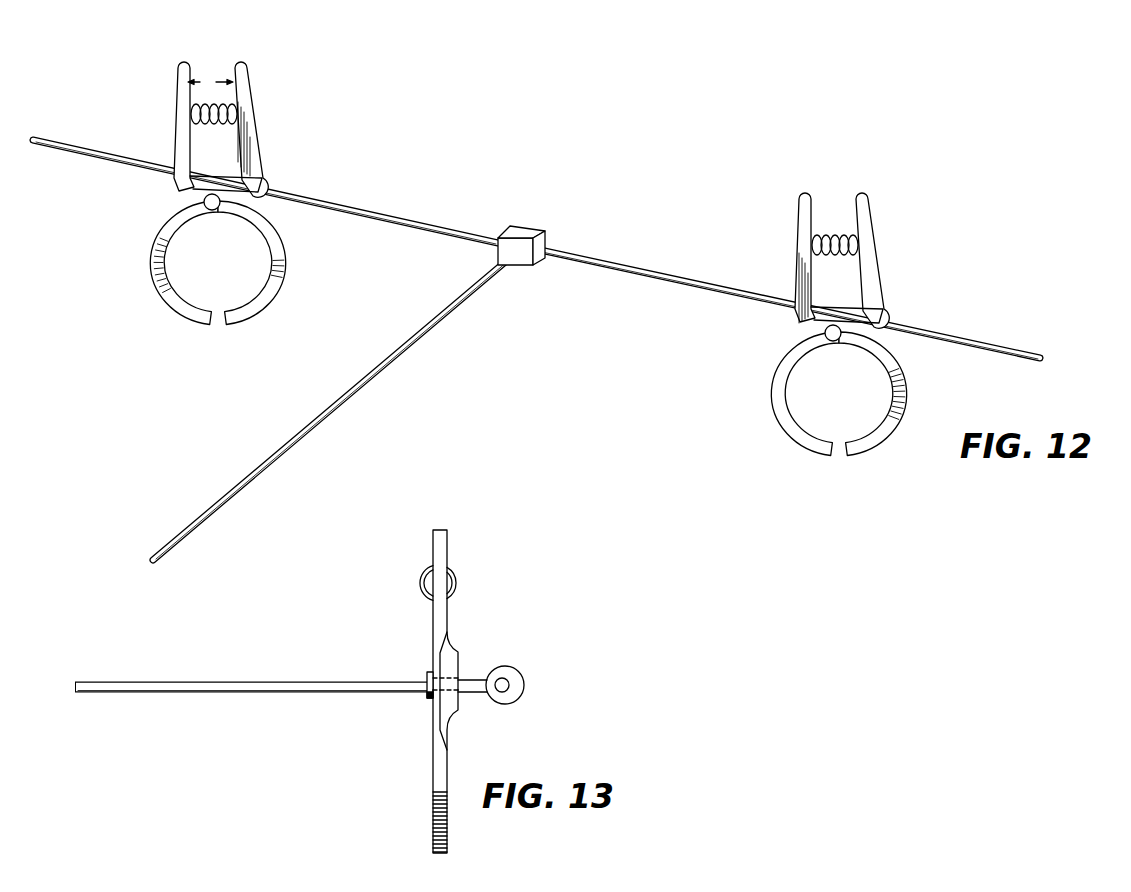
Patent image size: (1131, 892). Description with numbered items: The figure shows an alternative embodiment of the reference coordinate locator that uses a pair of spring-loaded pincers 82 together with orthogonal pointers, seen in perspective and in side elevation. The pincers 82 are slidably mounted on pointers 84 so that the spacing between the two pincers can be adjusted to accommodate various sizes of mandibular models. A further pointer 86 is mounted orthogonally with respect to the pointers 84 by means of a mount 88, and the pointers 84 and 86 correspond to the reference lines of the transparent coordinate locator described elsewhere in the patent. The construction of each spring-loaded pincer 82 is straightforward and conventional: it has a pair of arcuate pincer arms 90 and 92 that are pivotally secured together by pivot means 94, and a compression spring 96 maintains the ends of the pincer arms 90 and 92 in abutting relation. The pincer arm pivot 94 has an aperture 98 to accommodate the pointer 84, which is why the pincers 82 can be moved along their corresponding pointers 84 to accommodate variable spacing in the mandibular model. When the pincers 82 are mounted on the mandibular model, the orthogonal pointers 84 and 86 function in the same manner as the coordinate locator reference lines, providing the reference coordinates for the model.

In FIG. 12, the spring-loaded pincers 82 is at (532, 241).
In FIG. 12, the pointers 84 is at (113, 157).
In FIG. 13, the pointers 84 is at (507, 680).
In FIG. 12, the pointer 86 is at (447, 316).
In FIG. 13, the pointer 86 is at (245, 690).
In FIG. 12, the mount 88 is at (533, 233).
In FIG. 12, the arcuate pincer arm 90 is at (285, 290).
In FIG. 13, the arcuate pincer arm 90 is at (432, 750).
In FIG. 12, the arcuate pincer arm 92 is at (152, 270).
In FIG. 13, the arcuate pincer arm 92 is at (441, 623).
In FIG. 13, the pivot means 94 is at (466, 678).
In FIG. 12, the compression spring 96 is at (211, 102).
In FIG. 13, the compression spring 96 is at (457, 586).
In FIG. 13, the aperture 98 is at (516, 699).